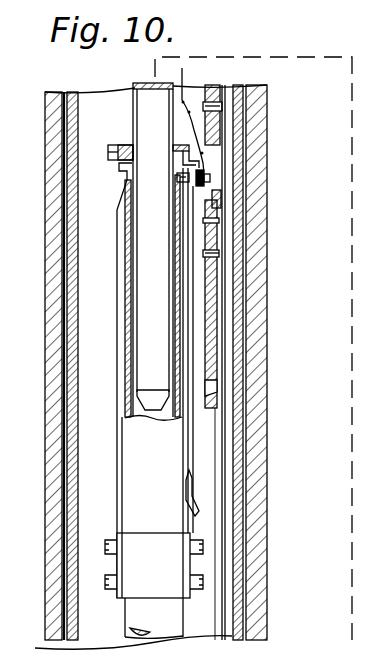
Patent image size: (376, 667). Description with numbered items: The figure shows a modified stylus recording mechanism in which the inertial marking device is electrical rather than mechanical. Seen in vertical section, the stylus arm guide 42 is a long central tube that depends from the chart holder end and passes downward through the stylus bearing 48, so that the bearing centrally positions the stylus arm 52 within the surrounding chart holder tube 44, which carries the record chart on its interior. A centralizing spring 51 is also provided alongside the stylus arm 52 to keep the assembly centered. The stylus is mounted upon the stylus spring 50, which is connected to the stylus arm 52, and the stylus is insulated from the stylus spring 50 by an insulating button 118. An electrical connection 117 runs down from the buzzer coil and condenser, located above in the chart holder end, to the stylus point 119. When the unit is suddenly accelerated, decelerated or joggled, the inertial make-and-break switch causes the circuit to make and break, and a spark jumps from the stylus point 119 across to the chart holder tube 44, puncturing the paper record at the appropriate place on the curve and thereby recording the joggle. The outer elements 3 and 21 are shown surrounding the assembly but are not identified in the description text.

The casing / well bore wall 3 is at (52, 265).
The inner liner tube 21 is at (72, 297).
The stylus arm guide 42 is at (142, 86).
The chart holder tube 44 is at (222, 147).
The stylus bearing 48 is at (128, 147).
The stylus spring 50 is at (195, 436).
The centralizing spring 51 is at (117, 206).
The stylus arm 52 is at (160, 625).
The electrical connection 117 is at (184, 75).
The insulating button 118 is at (222, 198).
The stylus point 119 is at (207, 171).